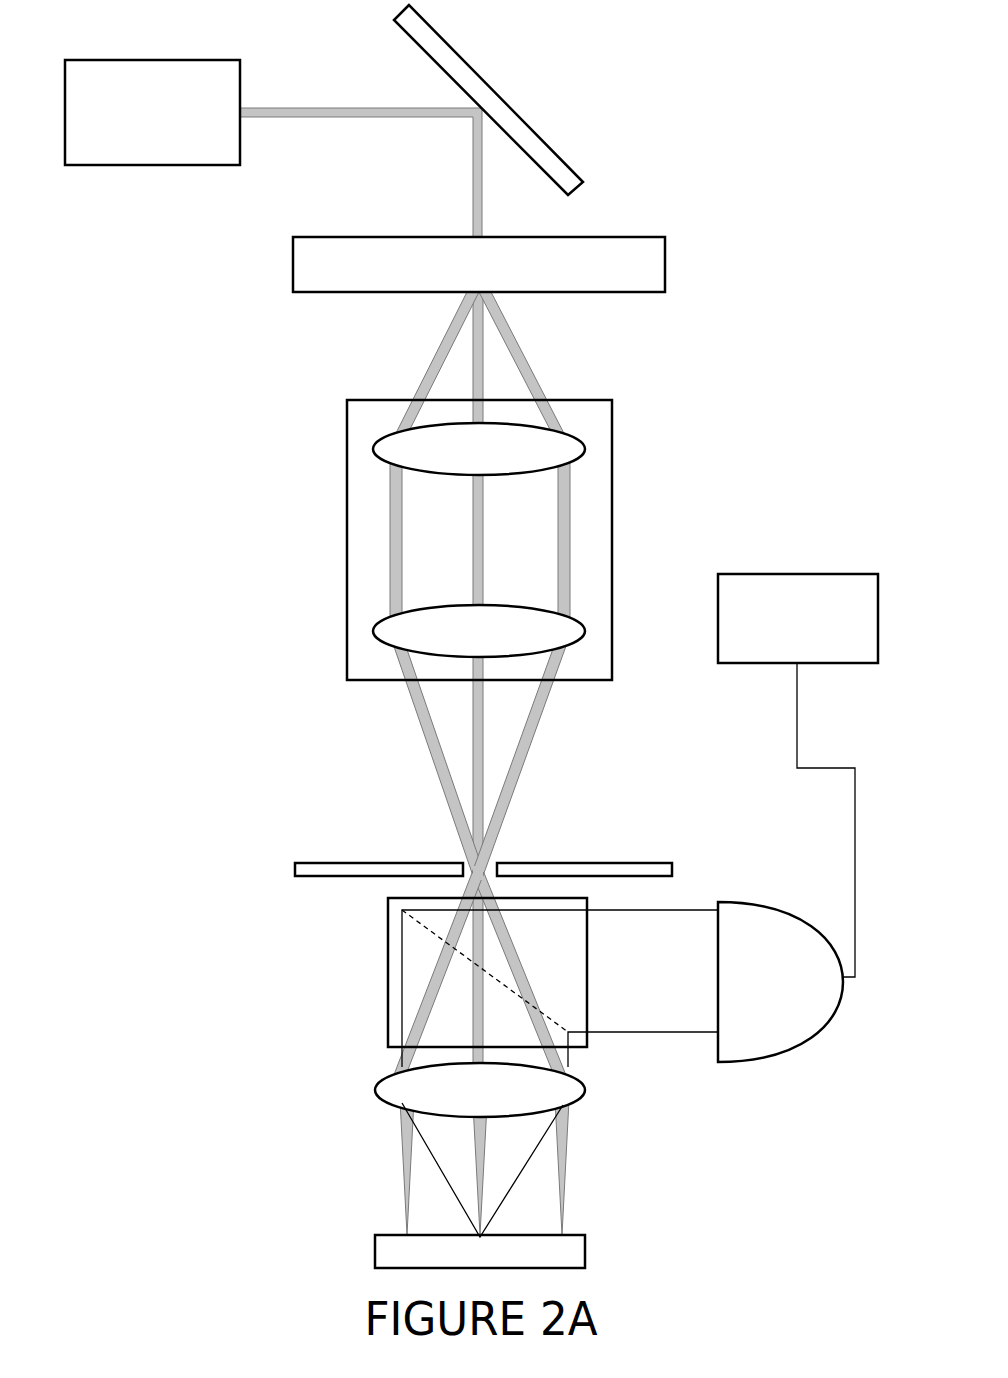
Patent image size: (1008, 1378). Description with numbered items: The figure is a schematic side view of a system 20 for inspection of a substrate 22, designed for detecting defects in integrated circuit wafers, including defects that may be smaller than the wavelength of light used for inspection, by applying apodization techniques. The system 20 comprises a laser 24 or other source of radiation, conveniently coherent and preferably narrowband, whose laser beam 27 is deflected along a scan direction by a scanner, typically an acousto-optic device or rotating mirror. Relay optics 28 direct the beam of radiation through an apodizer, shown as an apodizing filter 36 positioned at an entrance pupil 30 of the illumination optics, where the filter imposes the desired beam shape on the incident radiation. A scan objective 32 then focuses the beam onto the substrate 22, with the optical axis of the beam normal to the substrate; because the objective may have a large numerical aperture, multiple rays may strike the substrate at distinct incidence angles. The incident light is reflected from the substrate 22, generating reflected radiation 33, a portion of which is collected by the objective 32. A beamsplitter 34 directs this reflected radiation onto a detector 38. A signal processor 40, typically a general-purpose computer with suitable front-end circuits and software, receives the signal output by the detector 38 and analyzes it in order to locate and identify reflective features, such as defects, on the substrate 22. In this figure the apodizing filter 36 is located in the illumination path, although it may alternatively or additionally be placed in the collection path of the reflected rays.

The system 20 is at (198, 1246).
The substrate 22 is at (480, 1251).
The laser 24 is at (152, 112).
The laser beam 27 is at (475, 180).
The relay optics 28 is at (293, 433).
The entrance pupil 30 is at (382, 862).
The scan objective 32 is at (377, 1090).
The reflected radiation 33 is at (527, 1163).
The beamsplitter 34 is at (388, 975).
The apodizing filter 36 is at (492, 855).
The detector 38 is at (766, 872).
The signal processor 40 is at (798, 775).